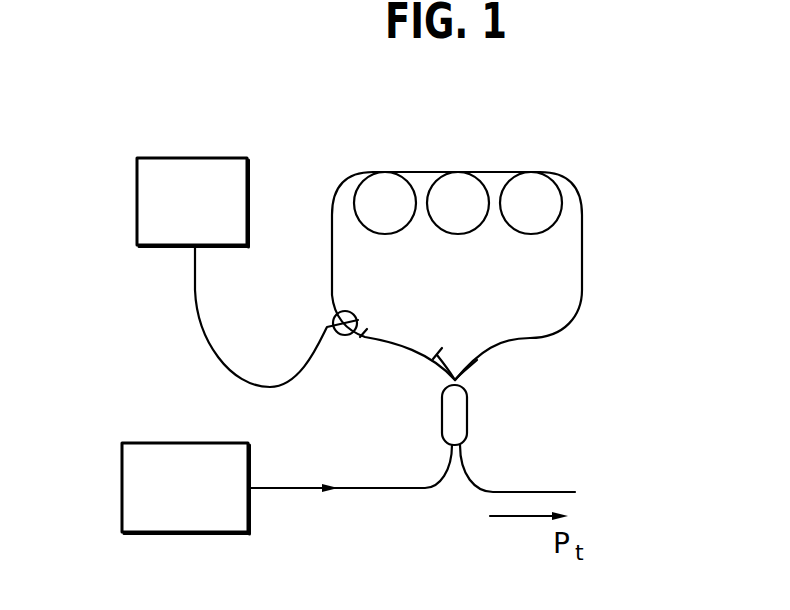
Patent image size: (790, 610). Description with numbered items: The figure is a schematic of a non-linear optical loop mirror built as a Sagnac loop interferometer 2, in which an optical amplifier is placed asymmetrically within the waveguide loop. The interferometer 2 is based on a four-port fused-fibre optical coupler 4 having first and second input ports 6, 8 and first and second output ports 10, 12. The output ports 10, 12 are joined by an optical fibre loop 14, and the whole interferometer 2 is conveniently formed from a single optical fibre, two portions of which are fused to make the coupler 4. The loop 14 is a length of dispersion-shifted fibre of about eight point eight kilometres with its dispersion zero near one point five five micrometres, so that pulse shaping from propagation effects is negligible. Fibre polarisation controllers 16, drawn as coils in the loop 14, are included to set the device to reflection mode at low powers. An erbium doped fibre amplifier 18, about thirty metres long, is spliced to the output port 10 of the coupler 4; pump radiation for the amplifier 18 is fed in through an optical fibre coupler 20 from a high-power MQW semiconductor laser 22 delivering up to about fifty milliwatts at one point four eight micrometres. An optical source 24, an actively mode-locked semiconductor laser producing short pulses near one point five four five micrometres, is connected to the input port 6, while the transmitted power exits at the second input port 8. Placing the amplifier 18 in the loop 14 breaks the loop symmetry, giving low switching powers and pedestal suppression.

The Sagnac loop interferometer 2 is at (592, 305).
The fused-fibre optical coupler 4 is at (468, 420).
The first input port 6 is at (427, 488).
The second input port 8 is at (462, 483).
The first output port 10 is at (447, 366).
The second output port 12 is at (465, 365).
The optical fibre loop 14 is at (583, 207).
The fibre polarisation controllers 16 is at (458, 177).
The erbium doped fibre amplifier 18 is at (400, 341).
The optical fibre coupler 20 is at (333, 319).
The semiconductor laser 22 is at (137, 182).
The optical source 24 is at (122, 487).